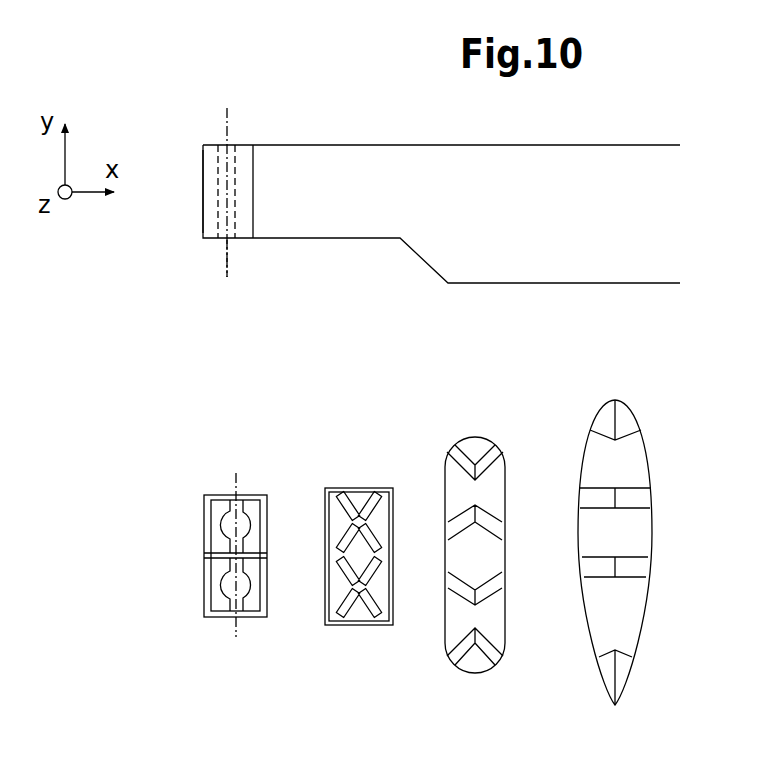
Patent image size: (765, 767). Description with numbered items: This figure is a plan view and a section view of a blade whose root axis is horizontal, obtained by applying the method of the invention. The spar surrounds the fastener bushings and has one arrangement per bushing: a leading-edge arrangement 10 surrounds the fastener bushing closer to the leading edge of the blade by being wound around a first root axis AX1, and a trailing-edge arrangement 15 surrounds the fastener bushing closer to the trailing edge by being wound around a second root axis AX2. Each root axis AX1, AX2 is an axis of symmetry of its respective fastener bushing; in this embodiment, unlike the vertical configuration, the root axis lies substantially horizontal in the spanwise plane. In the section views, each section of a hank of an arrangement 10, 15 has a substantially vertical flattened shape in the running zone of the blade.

The leading-edge arrangement 10 is at (201, 152).
The trailing-edge arrangement 15 is at (201, 230).
The first root axis AX1 is at (225, 125).
The second root axis AX2 is at (226, 258).